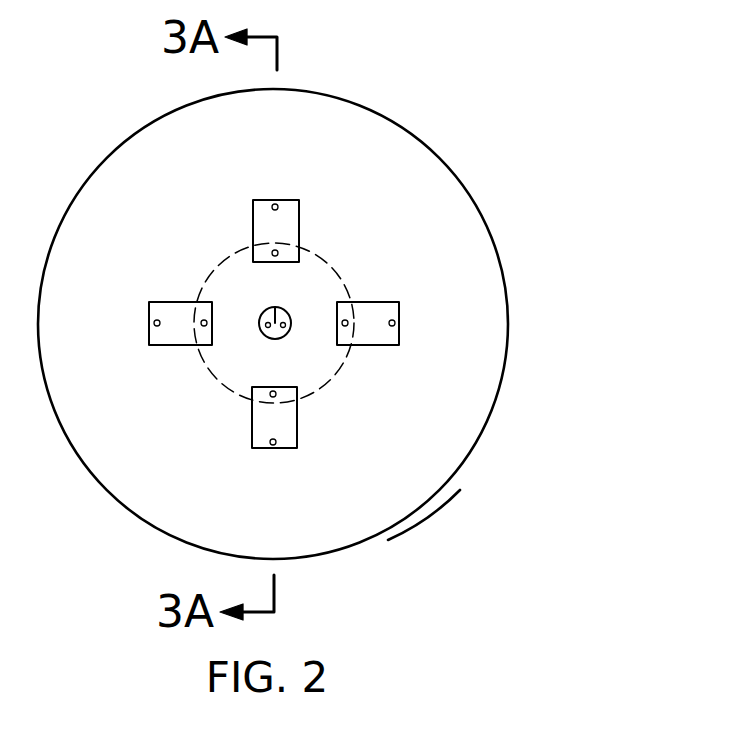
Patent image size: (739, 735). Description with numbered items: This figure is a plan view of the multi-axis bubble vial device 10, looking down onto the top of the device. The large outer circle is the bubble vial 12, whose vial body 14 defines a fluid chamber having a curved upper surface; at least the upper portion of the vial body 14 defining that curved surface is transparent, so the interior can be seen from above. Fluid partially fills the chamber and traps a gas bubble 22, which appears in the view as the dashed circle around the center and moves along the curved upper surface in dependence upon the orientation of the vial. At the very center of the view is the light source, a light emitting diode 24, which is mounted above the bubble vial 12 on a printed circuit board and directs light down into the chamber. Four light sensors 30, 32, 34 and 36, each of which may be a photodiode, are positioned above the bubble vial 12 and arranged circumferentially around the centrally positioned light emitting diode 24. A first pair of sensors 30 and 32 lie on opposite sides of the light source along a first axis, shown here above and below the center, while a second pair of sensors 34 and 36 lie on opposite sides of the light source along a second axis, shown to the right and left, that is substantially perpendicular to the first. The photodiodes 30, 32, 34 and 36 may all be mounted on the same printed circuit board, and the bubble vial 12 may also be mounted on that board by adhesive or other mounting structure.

The bubble vial device 10 is at (536, 280).
The bubble vial 12 is at (490, 220).
The vial body 14 is at (415, 485).
The gas bubble 22 is at (335, 270).
The light emitting diode 24 is at (260, 337).
The light sensor 30 is at (288, 200).
The light sensor 32 is at (293, 425).
The light sensor 34 is at (372, 342).
The light sensor 36 is at (172, 305).